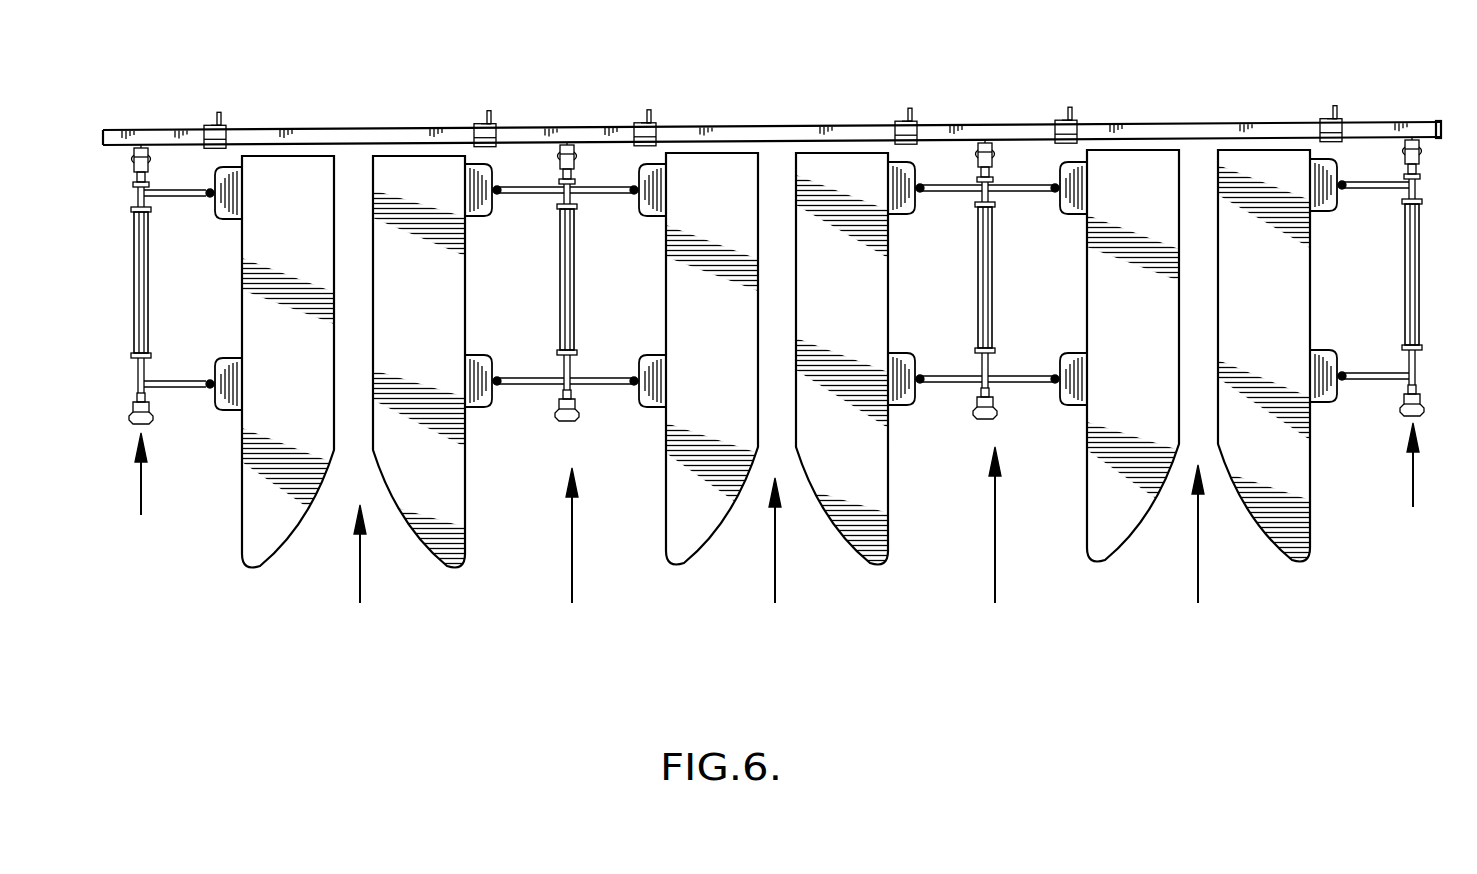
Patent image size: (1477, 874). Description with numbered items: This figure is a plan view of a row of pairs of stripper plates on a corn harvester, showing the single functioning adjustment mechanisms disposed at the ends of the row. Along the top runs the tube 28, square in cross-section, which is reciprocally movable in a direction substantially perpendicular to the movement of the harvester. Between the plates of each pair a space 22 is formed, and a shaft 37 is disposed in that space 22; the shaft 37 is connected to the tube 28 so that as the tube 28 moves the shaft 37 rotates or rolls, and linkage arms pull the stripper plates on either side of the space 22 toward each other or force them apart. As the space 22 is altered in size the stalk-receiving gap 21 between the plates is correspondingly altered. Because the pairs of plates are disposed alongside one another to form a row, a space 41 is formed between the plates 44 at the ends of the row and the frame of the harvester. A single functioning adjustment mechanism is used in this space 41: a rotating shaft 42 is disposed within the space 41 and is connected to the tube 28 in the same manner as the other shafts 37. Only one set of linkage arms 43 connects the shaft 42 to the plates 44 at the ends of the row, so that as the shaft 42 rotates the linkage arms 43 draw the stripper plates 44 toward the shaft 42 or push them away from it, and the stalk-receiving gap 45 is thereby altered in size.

The stalk-receiving gap 21 is at (776, 563).
The space 22 is at (785, 548).
The tube 28 is at (1142, 130).
The shaft 37 is at (983, 228).
The space 41 is at (780, 488).
The rotating shaft 42 is at (137, 293).
The linkage arms 43 is at (176, 196).
The plates 44 is at (270, 178).
The stalk-receiving gap 45 is at (782, 557).